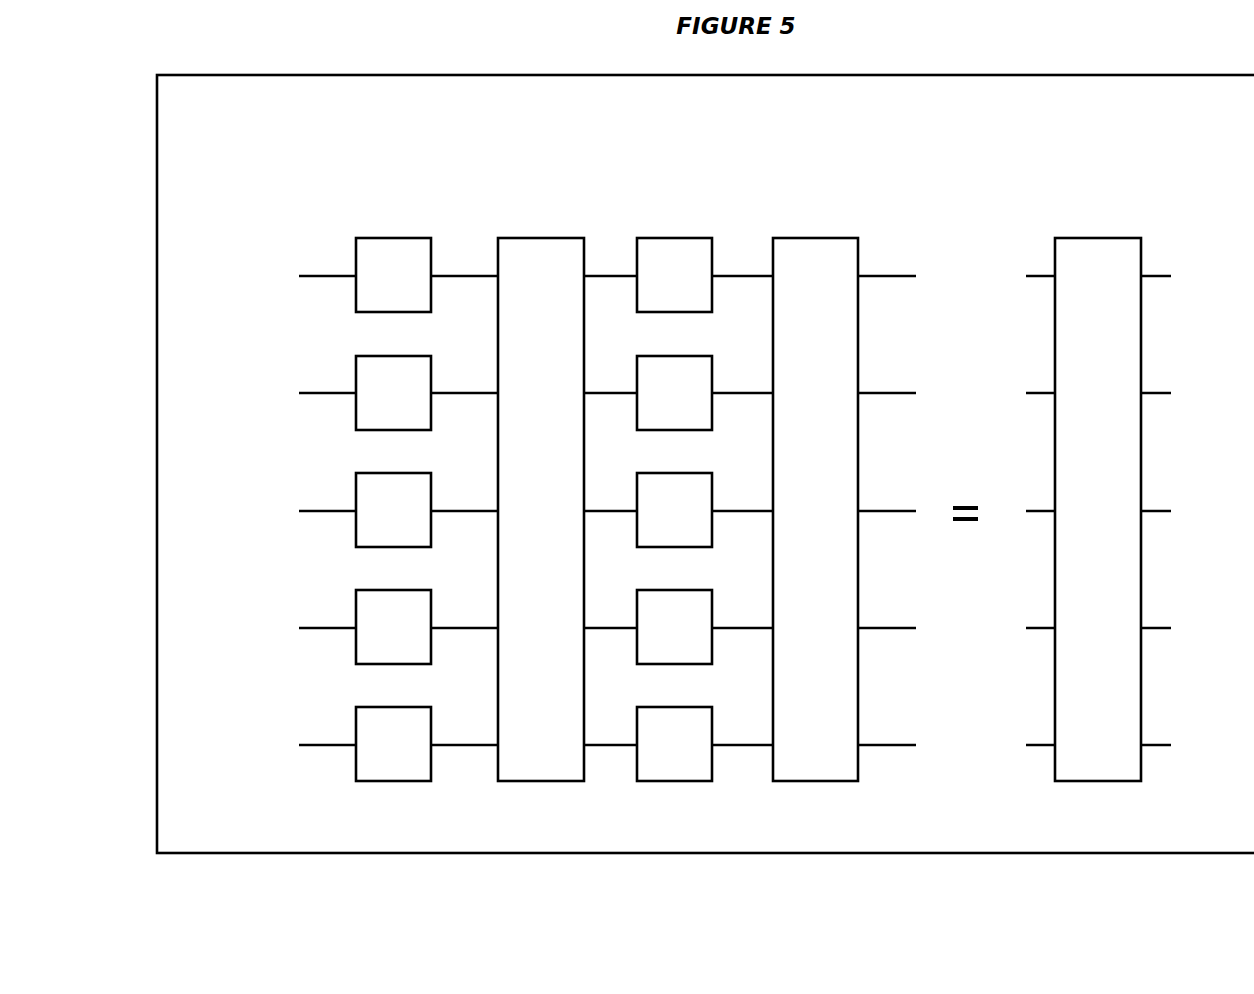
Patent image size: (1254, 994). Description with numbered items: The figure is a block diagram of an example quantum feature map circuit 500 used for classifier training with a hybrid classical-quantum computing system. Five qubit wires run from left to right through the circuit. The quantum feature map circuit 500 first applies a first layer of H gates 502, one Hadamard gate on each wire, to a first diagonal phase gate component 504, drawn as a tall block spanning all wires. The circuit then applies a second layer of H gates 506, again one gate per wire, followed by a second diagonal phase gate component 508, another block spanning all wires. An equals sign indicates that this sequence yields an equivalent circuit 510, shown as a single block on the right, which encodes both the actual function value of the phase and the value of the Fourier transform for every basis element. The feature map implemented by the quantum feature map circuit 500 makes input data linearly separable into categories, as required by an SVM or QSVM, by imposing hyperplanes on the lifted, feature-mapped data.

The quantum feature map circuit 500 is at (705, 464).
The first layer of H gates 502 is at (387, 237).
The first diagonal phase gate component 504 is at (533, 237).
The second layer of H gates 506 is at (672, 237).
The second diagonal phase gate component 508 is at (816, 237).
The equivalent circuit 510 is at (1098, 237).